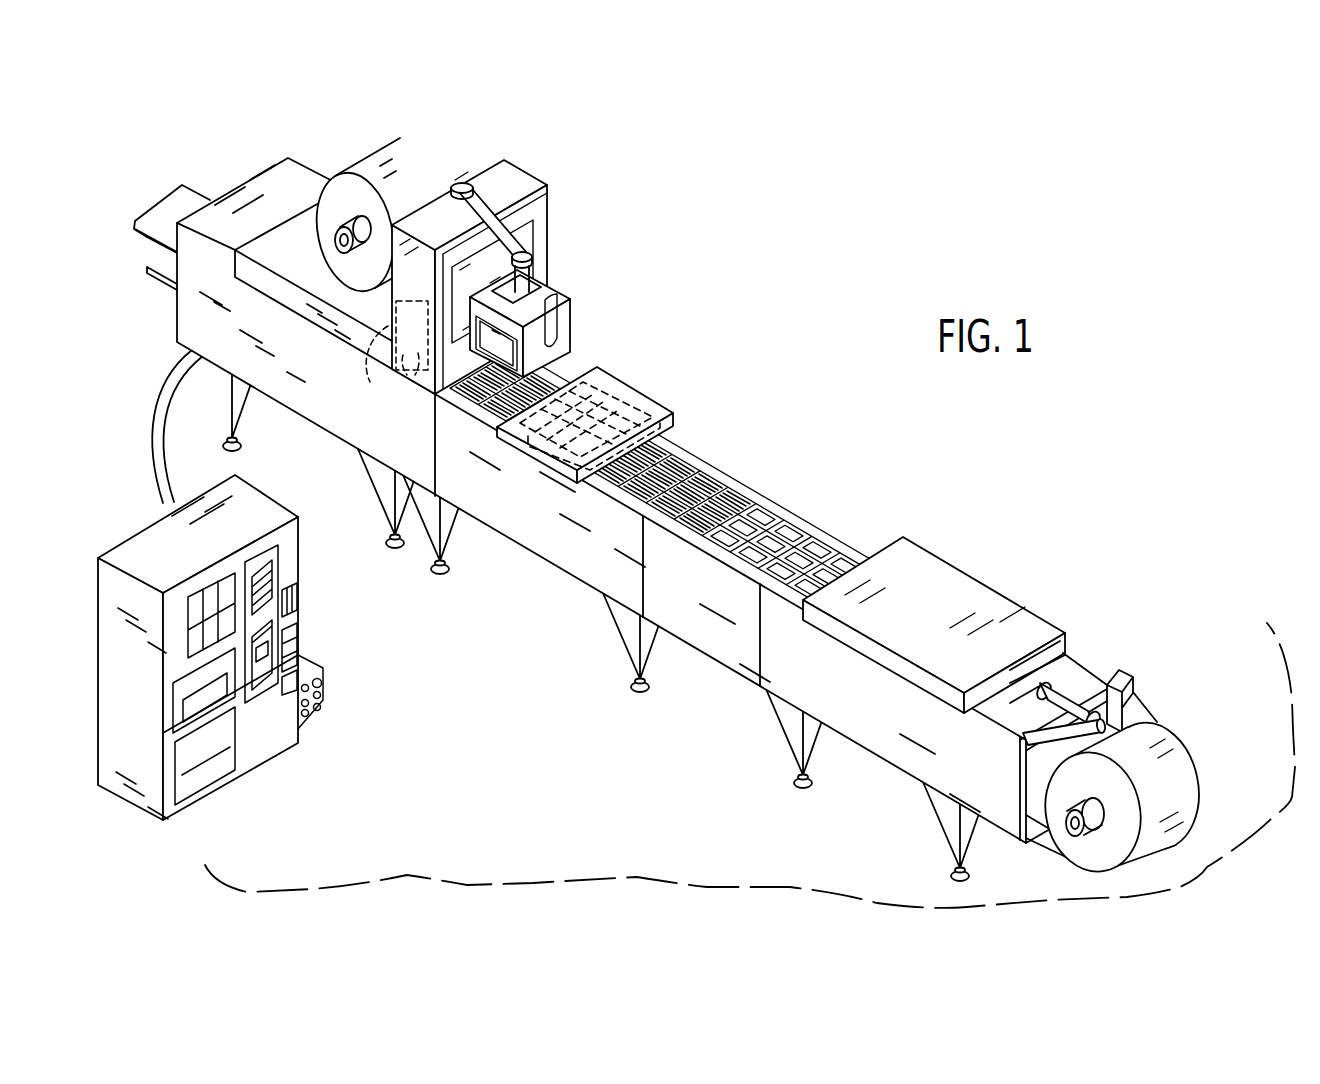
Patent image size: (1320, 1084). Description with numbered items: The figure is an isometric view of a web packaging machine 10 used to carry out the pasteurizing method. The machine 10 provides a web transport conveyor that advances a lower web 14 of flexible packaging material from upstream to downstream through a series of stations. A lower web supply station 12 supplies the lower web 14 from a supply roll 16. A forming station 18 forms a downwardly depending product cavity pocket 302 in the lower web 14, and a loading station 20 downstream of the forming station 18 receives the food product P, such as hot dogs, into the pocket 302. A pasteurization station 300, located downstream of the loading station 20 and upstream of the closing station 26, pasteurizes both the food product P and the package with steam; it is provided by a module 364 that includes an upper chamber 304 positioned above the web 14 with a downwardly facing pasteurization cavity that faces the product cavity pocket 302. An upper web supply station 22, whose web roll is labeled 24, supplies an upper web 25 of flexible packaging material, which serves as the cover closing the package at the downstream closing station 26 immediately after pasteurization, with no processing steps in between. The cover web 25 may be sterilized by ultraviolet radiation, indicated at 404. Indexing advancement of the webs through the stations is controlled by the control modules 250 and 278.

The packaging machine 10 is at (803, 396).
The lower web supply station 12 is at (1112, 673).
The lower web 14 is at (1062, 708).
The supply roll 16 is at (1185, 753).
The forming station 18 is at (998, 578).
The loading station 20 is at (678, 483).
The upper web supply station 22 is at (499, 266).
The lidding film roll 24 is at (418, 166).
The upper web 25 is at (422, 170).
The closing station 26 is at (317, 158).
The control module 250 is at (578, 323).
The control module 278 is at (302, 556).
The pasteurization station 300 is at (637, 382).
The product cavity pocket 302 is at (815, 548).
The upper chamber 304 is at (648, 405).
The module 364 is at (606, 370).
The ultraviolet radiation sterilization 404 is at (386, 354).
The food product P is at (778, 520).